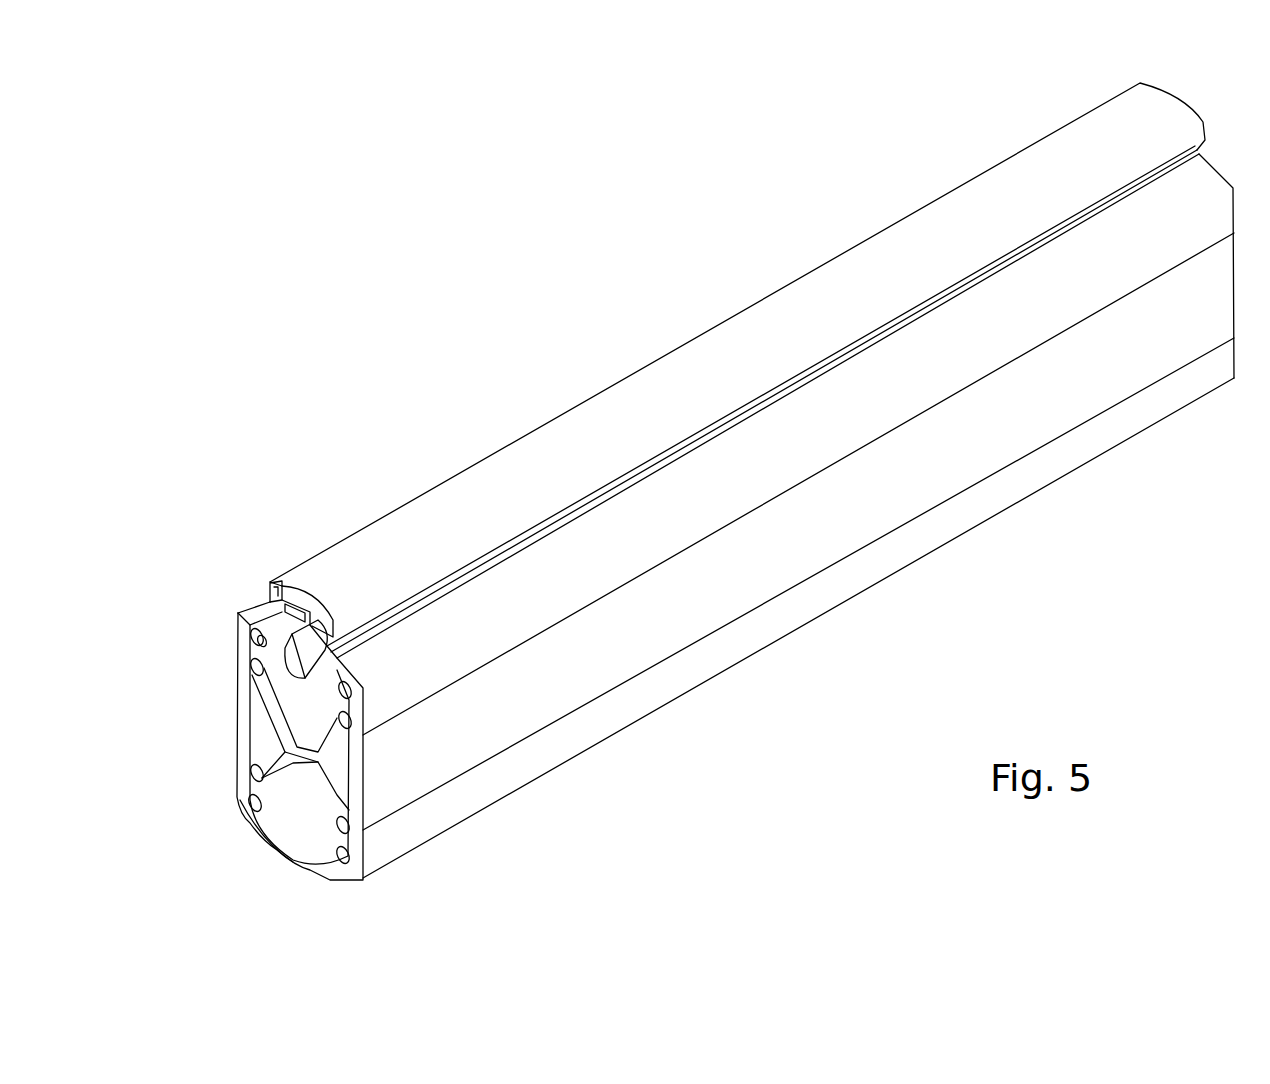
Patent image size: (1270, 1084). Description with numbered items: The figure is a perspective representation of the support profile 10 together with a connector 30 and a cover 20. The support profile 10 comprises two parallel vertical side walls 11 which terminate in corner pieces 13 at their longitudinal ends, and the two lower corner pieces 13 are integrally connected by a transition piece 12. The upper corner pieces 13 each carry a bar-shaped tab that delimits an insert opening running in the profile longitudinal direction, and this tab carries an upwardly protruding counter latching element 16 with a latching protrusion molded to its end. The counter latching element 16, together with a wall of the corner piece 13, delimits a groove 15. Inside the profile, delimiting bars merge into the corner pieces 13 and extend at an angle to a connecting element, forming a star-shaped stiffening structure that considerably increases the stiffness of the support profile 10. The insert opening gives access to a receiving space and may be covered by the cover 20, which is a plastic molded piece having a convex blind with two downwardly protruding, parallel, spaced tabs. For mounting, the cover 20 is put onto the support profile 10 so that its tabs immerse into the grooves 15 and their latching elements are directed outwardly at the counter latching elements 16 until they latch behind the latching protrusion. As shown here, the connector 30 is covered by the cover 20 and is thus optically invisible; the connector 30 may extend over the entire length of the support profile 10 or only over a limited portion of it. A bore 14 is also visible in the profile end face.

The support profile 10 is at (682, 722).
The side wall 11 is at (245, 727).
The transition piece 12 is at (292, 865).
The corner piece 13 is at (433, 633).
The bore 14 is at (257, 640).
The groove 15 is at (250, 612).
The counter latching element 16 is at (281, 612).
The cover 20 is at (663, 390).
The connector 30 is at (292, 692).